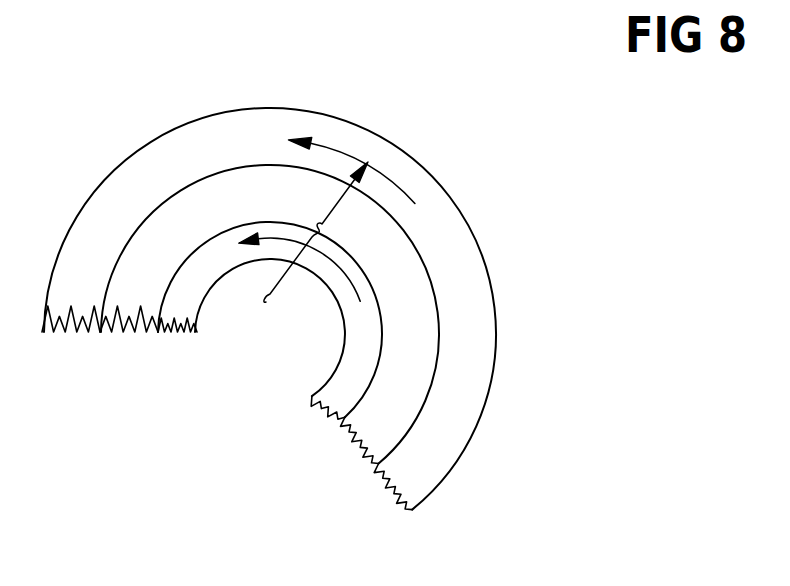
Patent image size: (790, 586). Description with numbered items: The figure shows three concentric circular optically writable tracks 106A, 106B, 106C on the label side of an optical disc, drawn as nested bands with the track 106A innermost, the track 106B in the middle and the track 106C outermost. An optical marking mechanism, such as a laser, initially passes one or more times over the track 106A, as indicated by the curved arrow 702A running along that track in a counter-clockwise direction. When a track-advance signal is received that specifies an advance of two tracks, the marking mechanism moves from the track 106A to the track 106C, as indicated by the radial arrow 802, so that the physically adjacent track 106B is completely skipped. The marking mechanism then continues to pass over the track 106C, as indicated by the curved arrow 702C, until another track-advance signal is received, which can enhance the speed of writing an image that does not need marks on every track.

The track 106A is at (320, 400).
The track 106B is at (358, 442).
The track 106C is at (398, 494).
The arrow 702A is at (343, 282).
The arrow 702C is at (355, 90).
The arrow 802 is at (316, 241).